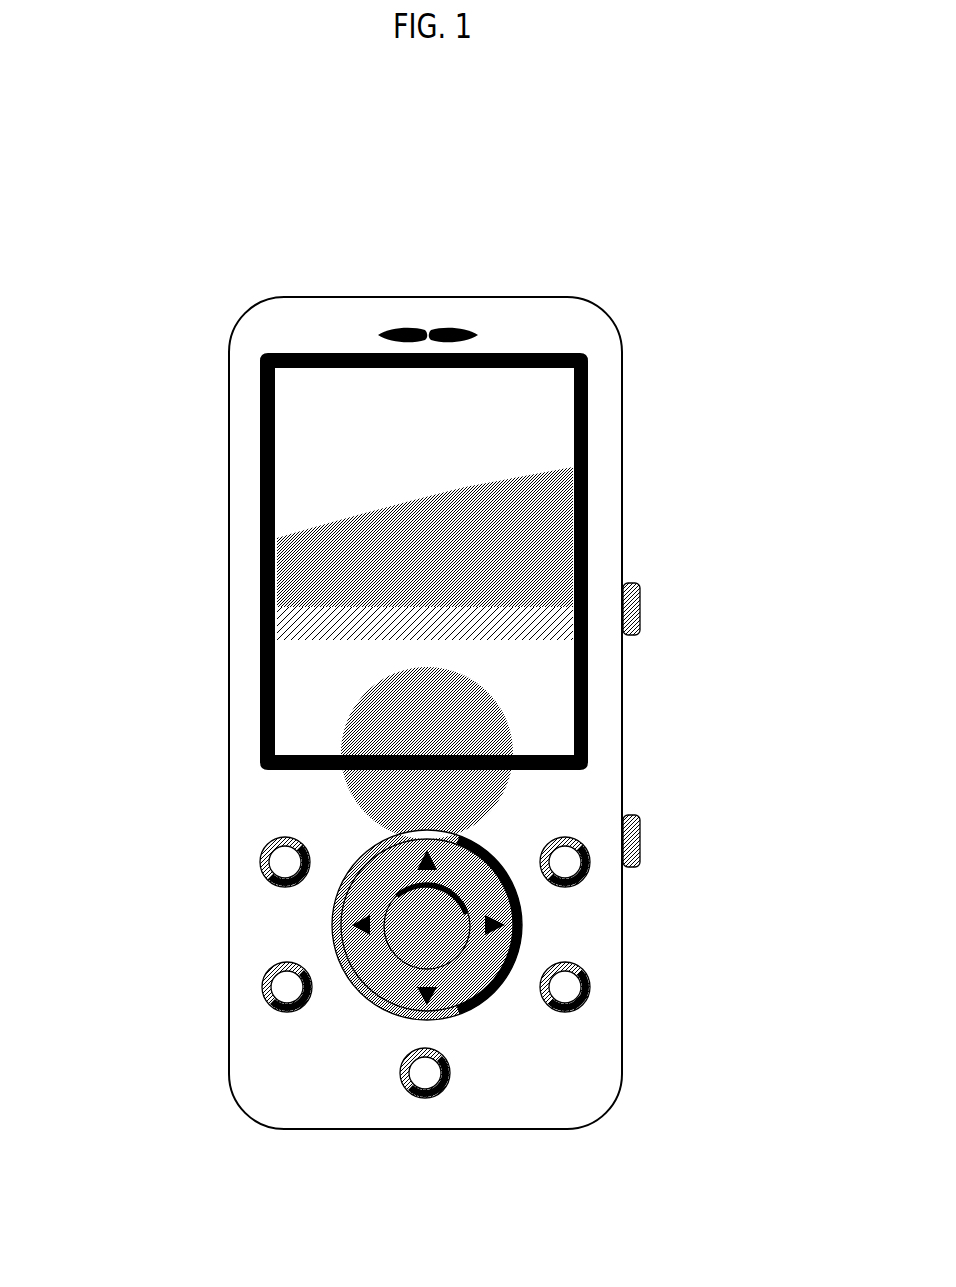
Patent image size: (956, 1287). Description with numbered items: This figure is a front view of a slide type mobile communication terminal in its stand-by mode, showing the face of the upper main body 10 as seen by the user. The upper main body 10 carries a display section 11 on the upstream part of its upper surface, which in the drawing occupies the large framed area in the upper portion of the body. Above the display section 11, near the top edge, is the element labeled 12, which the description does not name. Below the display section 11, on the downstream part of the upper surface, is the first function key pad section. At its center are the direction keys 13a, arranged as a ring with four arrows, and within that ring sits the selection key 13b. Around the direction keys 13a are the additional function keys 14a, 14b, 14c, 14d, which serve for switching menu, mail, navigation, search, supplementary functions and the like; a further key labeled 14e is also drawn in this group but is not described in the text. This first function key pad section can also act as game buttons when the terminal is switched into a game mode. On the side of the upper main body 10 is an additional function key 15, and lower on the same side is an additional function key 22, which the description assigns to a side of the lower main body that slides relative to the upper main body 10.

The upper main body 10 is at (608, 377).
The display section 11 is at (305, 588).
The speaker 12 is at (372, 325).
The direction keys 13a is at (355, 897).
The selection key 13b is at (408, 957).
The additional function key 14a is at (312, 863).
The additional function key 14b is at (320, 1000).
The additional function key 14c is at (453, 1080).
The additional function key 14d is at (593, 992).
The function key 14e is at (593, 875).
The additional function key 15 is at (640, 600).
The additional function key 22 is at (640, 845).